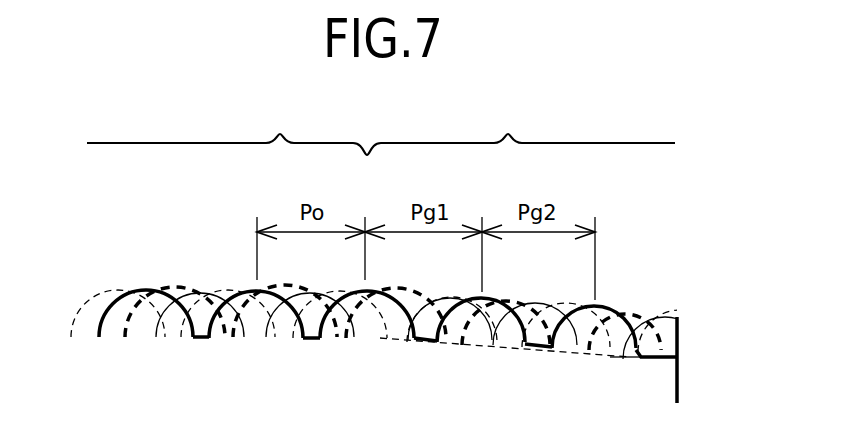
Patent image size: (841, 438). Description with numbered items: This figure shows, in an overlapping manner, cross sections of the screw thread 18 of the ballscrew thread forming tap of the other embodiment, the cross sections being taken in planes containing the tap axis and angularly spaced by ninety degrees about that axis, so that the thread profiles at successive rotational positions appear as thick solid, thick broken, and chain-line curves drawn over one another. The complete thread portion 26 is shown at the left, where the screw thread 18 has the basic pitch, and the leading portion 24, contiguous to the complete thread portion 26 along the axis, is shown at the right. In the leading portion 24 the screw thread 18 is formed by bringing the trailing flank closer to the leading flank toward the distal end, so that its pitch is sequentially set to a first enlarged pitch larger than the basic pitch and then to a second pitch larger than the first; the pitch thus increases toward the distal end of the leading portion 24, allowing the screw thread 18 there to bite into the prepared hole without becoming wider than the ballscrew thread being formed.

The screw thread 18 is at (115, 297).
The leading portion 24 is at (521, 133).
The complete thread portion 26 is at (227, 133).